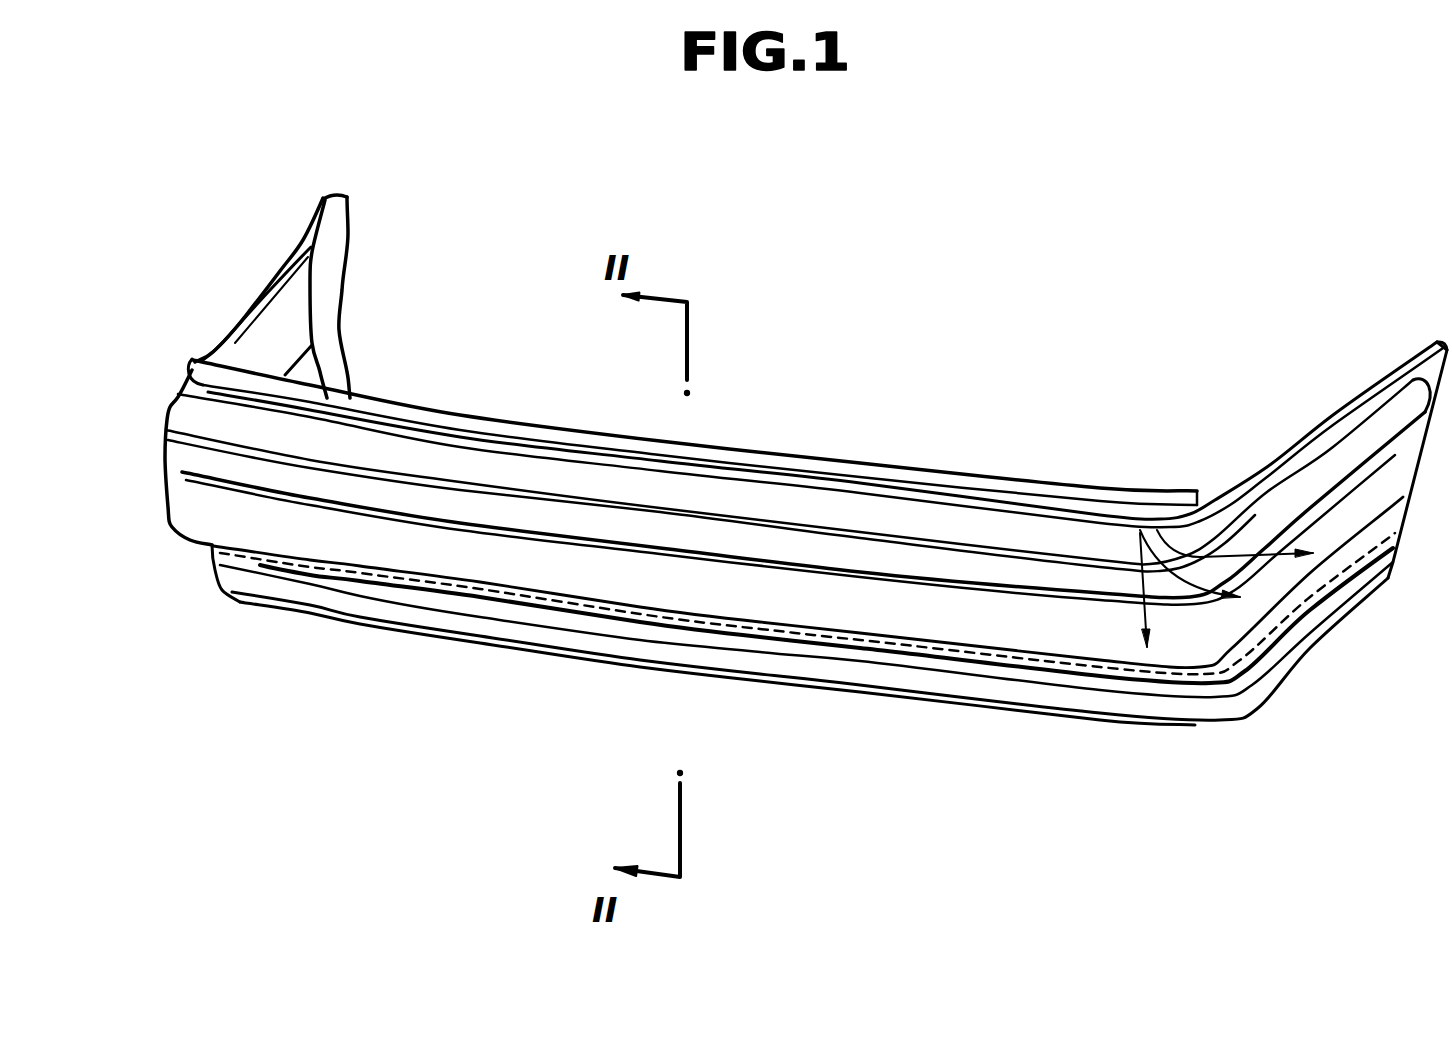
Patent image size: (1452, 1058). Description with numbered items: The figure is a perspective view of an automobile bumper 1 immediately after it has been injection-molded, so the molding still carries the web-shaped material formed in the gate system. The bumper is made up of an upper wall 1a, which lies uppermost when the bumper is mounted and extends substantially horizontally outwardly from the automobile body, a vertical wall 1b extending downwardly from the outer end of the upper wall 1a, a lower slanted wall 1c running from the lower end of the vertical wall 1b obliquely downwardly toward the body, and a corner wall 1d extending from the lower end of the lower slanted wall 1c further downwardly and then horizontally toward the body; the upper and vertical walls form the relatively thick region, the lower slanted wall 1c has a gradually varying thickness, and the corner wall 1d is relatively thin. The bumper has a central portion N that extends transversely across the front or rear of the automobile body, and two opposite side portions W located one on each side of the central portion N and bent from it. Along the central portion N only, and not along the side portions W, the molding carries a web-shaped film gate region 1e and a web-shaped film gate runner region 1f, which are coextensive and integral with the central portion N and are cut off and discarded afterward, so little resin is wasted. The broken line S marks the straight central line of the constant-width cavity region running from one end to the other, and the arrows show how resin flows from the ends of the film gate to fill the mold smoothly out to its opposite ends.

The automobile bumper 1 is at (1092, 283).
The upper wall 1a is at (947, 523).
The vertical wall 1b is at (188, 508).
The lower slanted wall 1c is at (548, 620).
The corner wall 1d is at (987, 693).
The film gate region 1e is at (400, 421).
The film gate runner region 1f is at (526, 433).
The side portions W is at (247, 283).
The broken line S is at (762, 642).
The central portion N is at (618, 683).